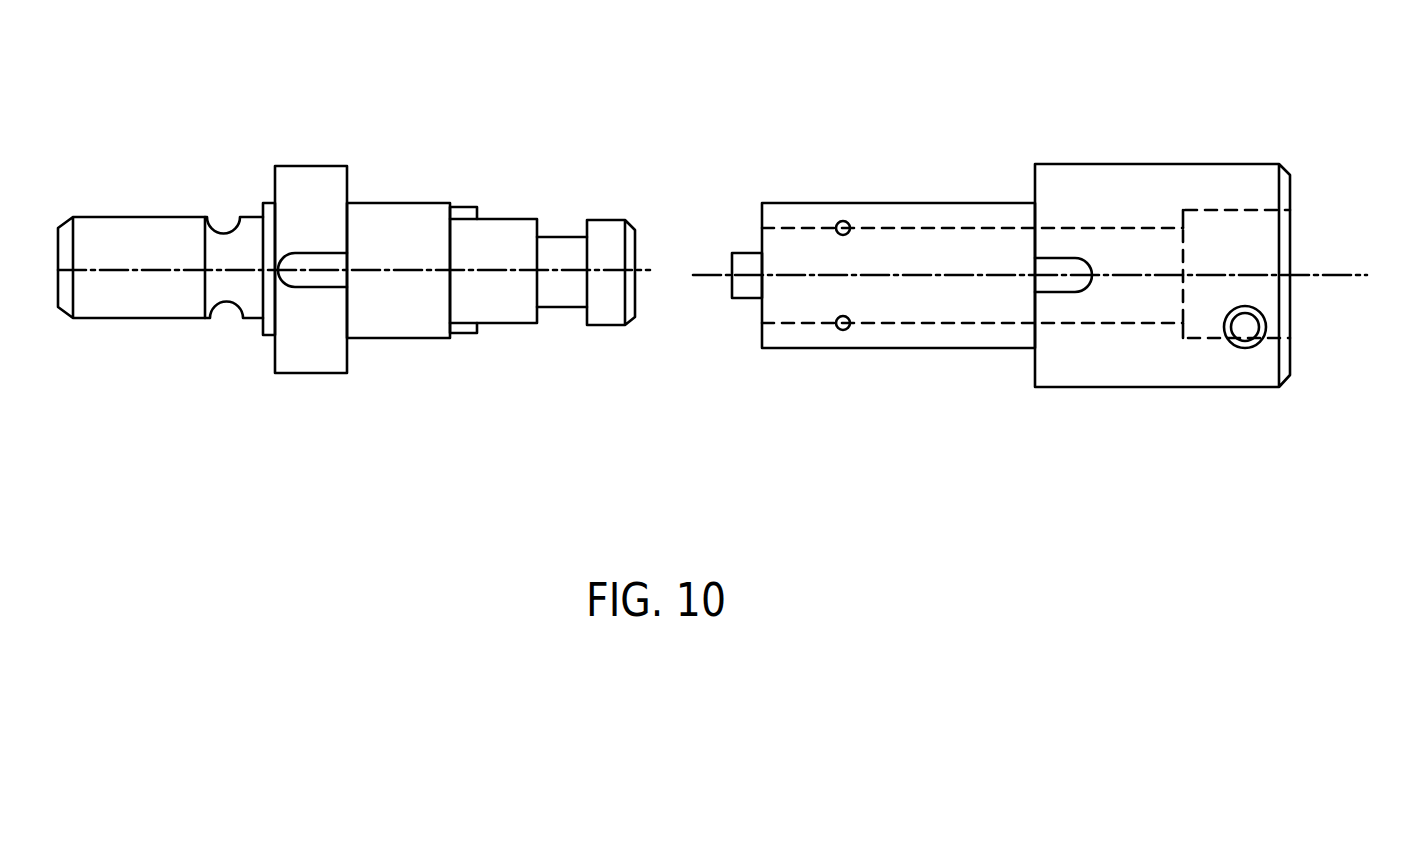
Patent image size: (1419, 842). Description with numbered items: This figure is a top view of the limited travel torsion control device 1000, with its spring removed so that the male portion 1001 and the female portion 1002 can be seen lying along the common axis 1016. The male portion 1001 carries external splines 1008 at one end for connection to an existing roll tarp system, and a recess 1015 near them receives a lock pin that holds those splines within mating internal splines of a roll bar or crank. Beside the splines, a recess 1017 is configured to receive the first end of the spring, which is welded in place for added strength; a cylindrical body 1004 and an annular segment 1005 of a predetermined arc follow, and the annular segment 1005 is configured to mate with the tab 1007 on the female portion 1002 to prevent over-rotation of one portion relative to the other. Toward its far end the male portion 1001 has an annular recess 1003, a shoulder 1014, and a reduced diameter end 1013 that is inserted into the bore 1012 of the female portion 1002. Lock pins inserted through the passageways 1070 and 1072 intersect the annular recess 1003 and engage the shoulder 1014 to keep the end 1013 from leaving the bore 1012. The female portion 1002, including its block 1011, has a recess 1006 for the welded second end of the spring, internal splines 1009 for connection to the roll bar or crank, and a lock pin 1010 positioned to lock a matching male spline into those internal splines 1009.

The limited travel torsion control device 1000 is at (588, 402).
The male portion 1001 is at (293, 373).
The female portion 1002 is at (1110, 388).
The annular recess 1003 is at (555, 237).
The cylindrical body 1004 is at (470, 338).
The annular segment 1005 is at (467, 206).
The recess 1006 is at (1052, 292).
The tab 1007 is at (733, 299).
The external splines 1008 is at (175, 218).
The internal splines 1009 is at (1258, 210).
The lock pin 1010 is at (1260, 330).
The block 1011 is at (1148, 323).
The bore 1012 is at (795, 227).
The reduced diameter end 1013 is at (630, 222).
The shoulder 1014 is at (585, 310).
The recess 1015 is at (225, 302).
The axis 1016 is at (123, 268).
The recess 1017 is at (328, 290).
The passageway 1070 is at (844, 331).
The passageway 1072 is at (847, 223).